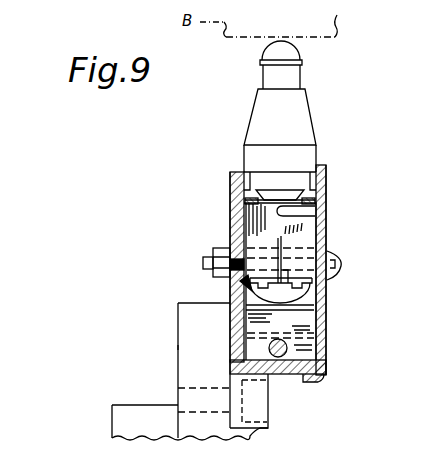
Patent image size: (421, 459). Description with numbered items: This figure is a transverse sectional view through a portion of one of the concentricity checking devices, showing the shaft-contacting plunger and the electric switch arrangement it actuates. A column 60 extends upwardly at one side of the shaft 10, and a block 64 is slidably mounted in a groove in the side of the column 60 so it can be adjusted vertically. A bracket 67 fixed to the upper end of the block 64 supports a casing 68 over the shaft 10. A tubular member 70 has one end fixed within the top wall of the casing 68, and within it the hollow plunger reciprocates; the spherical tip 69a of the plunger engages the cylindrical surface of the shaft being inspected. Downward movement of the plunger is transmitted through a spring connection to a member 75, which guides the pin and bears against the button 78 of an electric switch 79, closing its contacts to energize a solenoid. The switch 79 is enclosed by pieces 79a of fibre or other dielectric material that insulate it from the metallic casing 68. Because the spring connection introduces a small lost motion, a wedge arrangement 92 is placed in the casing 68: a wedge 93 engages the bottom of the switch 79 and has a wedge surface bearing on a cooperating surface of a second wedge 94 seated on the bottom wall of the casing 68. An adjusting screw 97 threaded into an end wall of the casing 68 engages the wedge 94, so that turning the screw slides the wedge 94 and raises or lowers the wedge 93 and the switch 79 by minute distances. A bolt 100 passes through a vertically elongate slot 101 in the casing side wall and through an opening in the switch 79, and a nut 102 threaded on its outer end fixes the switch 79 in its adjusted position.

The shaft 10 is at (321, 90).
The column 60 is at (133, 408).
The block 64 is at (182, 346).
The bracket 67 is at (236, 428).
The casing 68 is at (228, 321).
The spherical tip 69a is at (262, 55).
The tubular member 70 is at (316, 128).
The member 75 is at (281, 197).
The button 78 is at (318, 211).
The electric switch 79 is at (258, 215).
The pieces of fibre 79a is at (243, 223).
The wedge arrangement 92 is at (296, 316).
The wedge 93 is at (320, 301).
The wedge 94 is at (308, 352).
The adjusting screw 97 is at (281, 358).
The bolt 100 is at (340, 264).
The slot 101 is at (243, 287).
The nut 102 is at (218, 244).